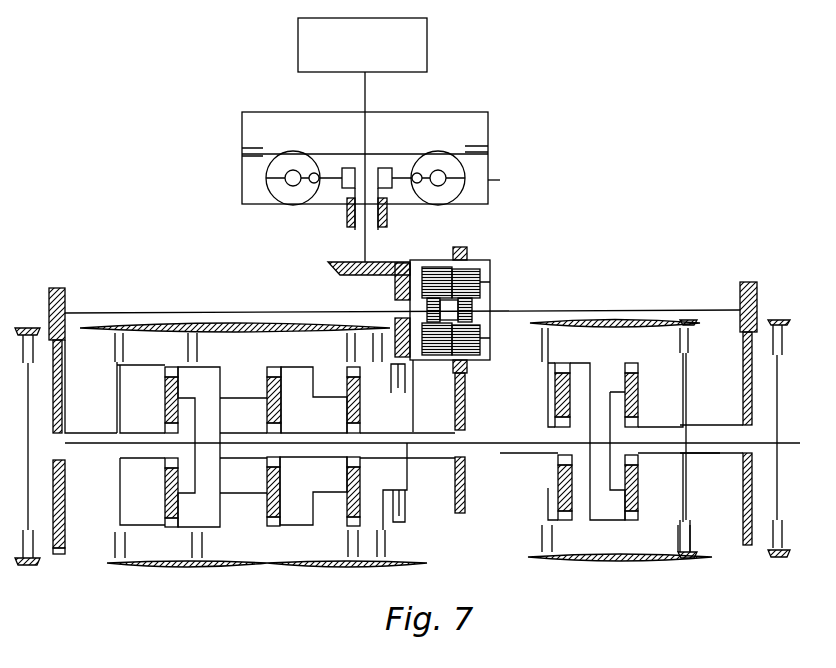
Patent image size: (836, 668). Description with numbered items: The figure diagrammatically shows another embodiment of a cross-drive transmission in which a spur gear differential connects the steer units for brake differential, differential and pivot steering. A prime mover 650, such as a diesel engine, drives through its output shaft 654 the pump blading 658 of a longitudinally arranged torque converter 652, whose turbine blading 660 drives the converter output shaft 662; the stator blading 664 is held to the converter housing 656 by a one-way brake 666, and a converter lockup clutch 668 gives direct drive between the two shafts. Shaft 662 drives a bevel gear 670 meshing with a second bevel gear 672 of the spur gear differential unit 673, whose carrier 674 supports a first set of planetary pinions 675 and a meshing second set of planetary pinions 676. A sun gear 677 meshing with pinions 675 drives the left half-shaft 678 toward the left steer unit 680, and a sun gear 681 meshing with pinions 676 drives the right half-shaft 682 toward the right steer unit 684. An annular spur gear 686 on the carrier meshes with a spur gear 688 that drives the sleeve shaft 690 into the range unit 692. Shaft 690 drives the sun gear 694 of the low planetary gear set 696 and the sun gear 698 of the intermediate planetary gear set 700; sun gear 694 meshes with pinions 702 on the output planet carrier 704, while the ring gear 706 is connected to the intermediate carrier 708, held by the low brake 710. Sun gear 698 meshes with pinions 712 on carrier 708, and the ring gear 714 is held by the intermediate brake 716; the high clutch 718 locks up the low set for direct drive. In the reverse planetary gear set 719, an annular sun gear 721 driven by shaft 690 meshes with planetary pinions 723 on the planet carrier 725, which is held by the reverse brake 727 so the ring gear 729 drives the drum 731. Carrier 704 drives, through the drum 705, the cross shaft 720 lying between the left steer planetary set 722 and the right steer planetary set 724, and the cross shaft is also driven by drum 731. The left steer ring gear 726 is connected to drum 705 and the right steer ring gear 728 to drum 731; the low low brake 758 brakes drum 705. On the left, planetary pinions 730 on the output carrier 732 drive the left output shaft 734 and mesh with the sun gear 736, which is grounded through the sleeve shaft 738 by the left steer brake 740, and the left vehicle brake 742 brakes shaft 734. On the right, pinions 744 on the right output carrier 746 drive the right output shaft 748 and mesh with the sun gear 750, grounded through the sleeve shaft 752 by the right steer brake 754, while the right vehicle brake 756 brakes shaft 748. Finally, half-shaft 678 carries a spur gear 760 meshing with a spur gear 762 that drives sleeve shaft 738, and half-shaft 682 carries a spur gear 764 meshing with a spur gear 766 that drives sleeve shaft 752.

The prime mover 650 is at (427, 38).
The torque converter 652 is at (242, 180).
The prime mover output shaft 654 is at (365, 90).
The housing 656 is at (500, 180).
The pump blading 658 is at (293, 205).
The turbine blading 660 is at (300, 133).
The converter output shaft 662 is at (365, 240).
The stator blading 664 is at (418, 158).
The one-way brake 666 is at (348, 168).
The converter lockup clutch 668 is at (483, 140).
The bevel gear 670 is at (345, 263).
The second bevel gear 672 is at (405, 278).
The spur gear differential unit 673 is at (472, 302).
The carrier 674 is at (492, 272).
The first set of planetary pinions 675 is at (433, 275).
The second set of planetary pinions 676 is at (468, 290).
The sun gear 677 is at (440, 340).
The left half-shaft 678 is at (282, 313).
The left steer unit 680 is at (180, 572).
The sun gear 681 is at (478, 318).
The right half-shaft 682 is at (620, 320).
The right steer unit 684 is at (620, 566).
The annular spur gear 686 is at (458, 250).
The spur gear 688 is at (465, 455).
The sleeve shaft 690 is at (430, 412).
The range unit 692 is at (318, 572).
The sun gear 694 is at (262, 440).
The low planetary gear set 696 is at (265, 392).
The sun gear 698 is at (268, 460).
The intermediate planetary gear set 700 is at (345, 388).
The pinions 702 is at (285, 400).
The output planet carrier 704 is at (225, 372).
The drum 705 is at (177, 365).
The ring gear 706 is at (272, 365).
The intermediate carrier 708 is at (312, 488).
The low brake 710 is at (383, 332).
The pinions 712 is at (360, 402).
The ring gear 714 is at (353, 522).
The intermediate brake 716 is at (365, 552).
The high clutch 718 is at (405, 508).
The reverse planetary gear set 719 is at (578, 385).
The cross shaft 720 is at (408, 450).
The annular sun gear 721 is at (556, 428).
The left steer planetary set 722 is at (163, 392).
The planetary pinions 723 is at (556, 385).
The right steer planetary set 724 is at (640, 395).
The planet carrier 725 is at (548, 365).
The left steer ring gear 726 is at (168, 522).
The reverse brake 727 is at (556, 340).
The right steer ring gear 728 is at (632, 365).
The ring gear 729 is at (570, 520).
The planetary pinions 730 is at (165, 415).
The drum 731 is at (628, 520).
The output carrier 732 is at (195, 405).
The left output shaft 734 is at (110, 445).
The sun gear 736 is at (165, 465).
The sleeve shaft 738 is at (112, 445).
The left steer brake 740 is at (123, 350).
The left vehicle brake 742 is at (25, 548).
The pinions 744 is at (640, 420).
The right output carrier 746 is at (600, 490).
The right output shaft 748 is at (795, 447).
The sun gear 750 is at (638, 460).
The sleeve shaft 752 is at (690, 455).
The right steer brake 754 is at (700, 340).
The right vehicle brake 756 is at (785, 330).
The low low brake 758 is at (208, 345).
The spur gear 760 is at (55, 300).
The spur gear 762 is at (62, 395).
The spur gear 764 is at (752, 300).
The spur gear 766 is at (752, 405).